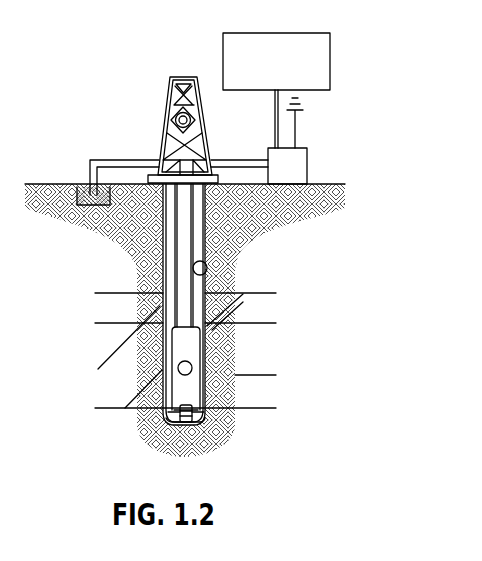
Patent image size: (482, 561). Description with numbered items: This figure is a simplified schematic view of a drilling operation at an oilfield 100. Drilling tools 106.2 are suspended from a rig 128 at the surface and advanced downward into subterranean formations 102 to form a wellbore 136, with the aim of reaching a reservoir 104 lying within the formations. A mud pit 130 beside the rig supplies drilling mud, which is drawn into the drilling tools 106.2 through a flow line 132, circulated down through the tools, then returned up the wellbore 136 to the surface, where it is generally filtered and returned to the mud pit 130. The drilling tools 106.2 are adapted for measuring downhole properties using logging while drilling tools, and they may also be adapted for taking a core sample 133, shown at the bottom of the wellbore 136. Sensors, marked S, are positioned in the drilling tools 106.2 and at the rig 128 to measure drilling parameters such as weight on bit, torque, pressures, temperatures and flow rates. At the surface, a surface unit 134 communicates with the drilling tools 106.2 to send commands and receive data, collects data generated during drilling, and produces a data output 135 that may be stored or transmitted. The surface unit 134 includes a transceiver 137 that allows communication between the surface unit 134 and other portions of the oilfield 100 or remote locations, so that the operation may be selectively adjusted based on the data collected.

The oilfield 100 is at (102, 30).
The subterranean formations 102 is at (302, 286).
The reservoir 104 is at (280, 364).
The drilling tools 106.2 is at (172, 380).
The rig 128 is at (163, 127).
The mud pit 130 is at (100, 208).
The flow line 132 is at (90, 170).
The core sample 133 is at (165, 419).
The surface unit 134 is at (308, 165).
The data output 135 is at (290, 32).
The wellbore 136 is at (206, 276).
The transceiver 137 is at (297, 128).